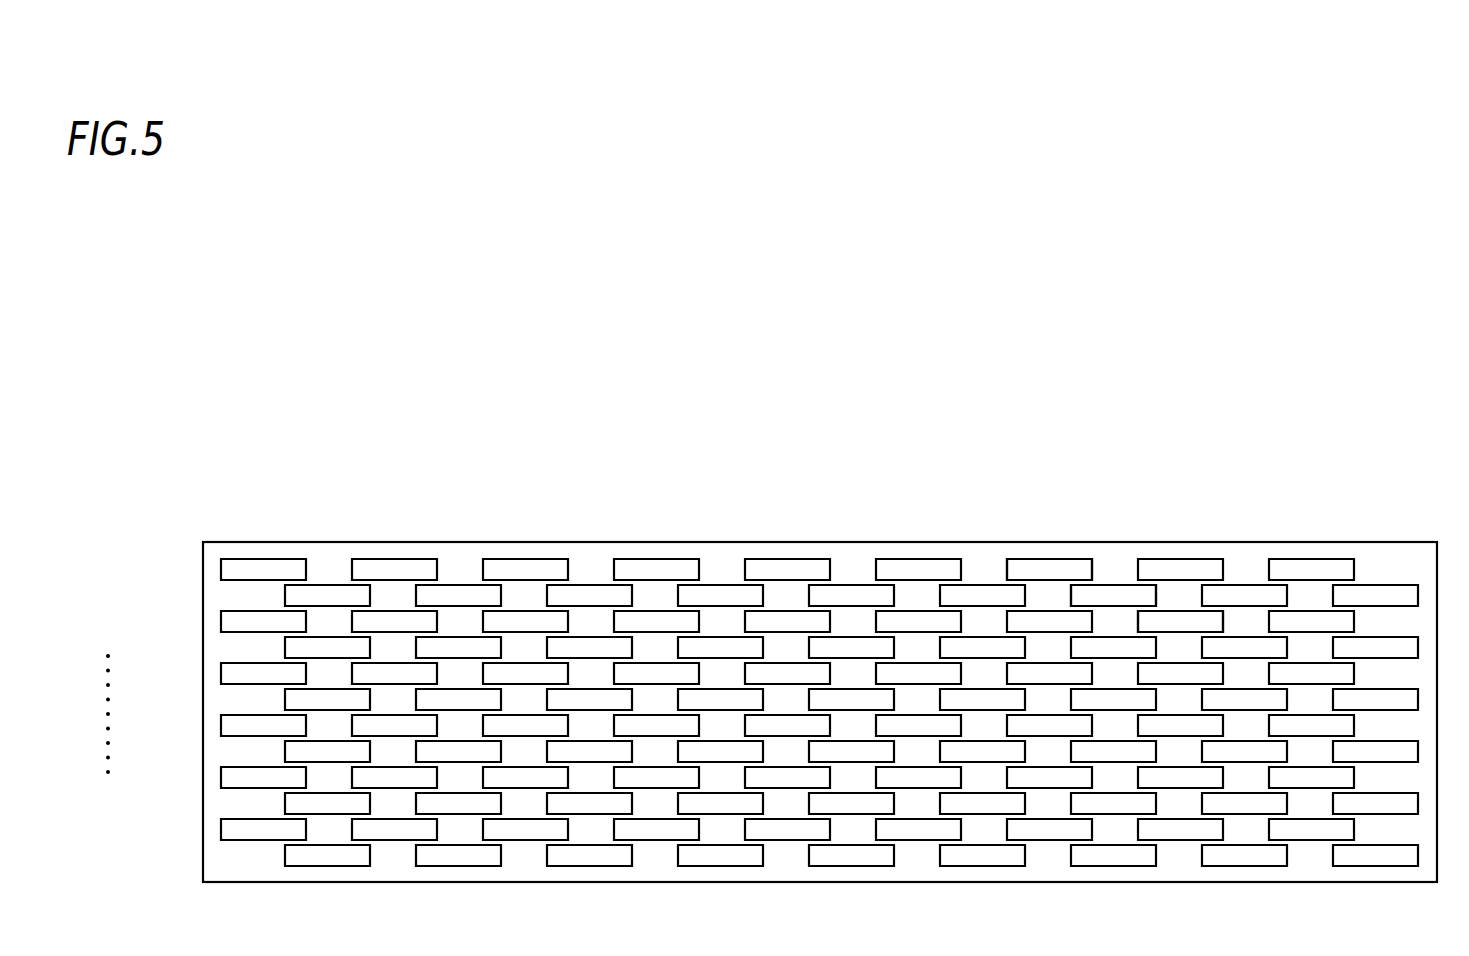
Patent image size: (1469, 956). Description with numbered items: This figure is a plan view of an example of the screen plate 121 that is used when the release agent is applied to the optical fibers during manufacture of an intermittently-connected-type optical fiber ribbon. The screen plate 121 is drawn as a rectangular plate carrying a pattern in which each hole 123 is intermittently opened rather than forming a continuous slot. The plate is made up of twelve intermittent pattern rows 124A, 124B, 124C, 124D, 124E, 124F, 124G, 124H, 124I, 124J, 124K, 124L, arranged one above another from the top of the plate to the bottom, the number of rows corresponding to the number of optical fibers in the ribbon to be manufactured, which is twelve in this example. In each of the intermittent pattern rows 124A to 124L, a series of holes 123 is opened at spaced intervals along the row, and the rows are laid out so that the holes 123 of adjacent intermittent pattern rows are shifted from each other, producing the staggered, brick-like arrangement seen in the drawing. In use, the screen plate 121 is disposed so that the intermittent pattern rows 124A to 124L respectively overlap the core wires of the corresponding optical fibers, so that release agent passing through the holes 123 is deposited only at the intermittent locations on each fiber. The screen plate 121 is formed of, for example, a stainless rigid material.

The screen plate 121 is at (857, 417).
The hole 123 is at (1197, 618).
The intermittent pattern row 124A is at (228, 567).
The intermittent pattern row 124B is at (285, 597).
The intermittent pattern row 124C is at (228, 618).
The intermittent pattern row 124D is at (851, 647).
The intermittent pattern row 124E is at (787, 673).
The intermittent pattern row 124F is at (851, 699).
The intermittent pattern row 124G is at (787, 725).
The intermittent pattern row 124H is at (851, 751).
The intermittent pattern row 124I is at (787, 777).
The intermittent pattern row 124J is at (290, 803).
The intermittent pattern row 124K is at (226, 829).
The intermittent pattern row 124L is at (290, 856).